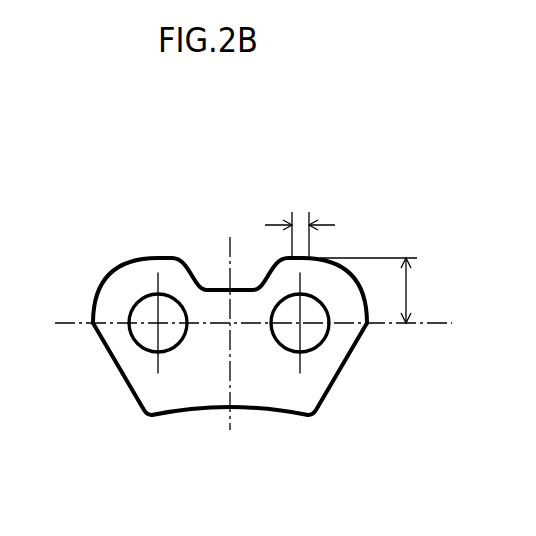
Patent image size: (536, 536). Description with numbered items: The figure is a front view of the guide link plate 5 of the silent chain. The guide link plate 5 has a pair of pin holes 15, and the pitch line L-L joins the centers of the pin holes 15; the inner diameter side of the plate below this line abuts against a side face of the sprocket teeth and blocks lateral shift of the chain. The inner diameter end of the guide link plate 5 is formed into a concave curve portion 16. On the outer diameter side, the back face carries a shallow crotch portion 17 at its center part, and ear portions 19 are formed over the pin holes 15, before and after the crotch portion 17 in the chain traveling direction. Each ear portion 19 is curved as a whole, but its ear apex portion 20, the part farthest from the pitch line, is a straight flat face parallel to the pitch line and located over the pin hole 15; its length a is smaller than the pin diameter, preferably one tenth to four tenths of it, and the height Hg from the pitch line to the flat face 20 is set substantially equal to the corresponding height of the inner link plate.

The guide link plate 5 is at (252, 300).
The pin holes 15 is at (138, 336).
The concave curve portion 16 is at (190, 414).
The crotch portion 17 is at (220, 288).
The ear portions 19 is at (118, 270).
The ear apex portion 20 is at (155, 257).